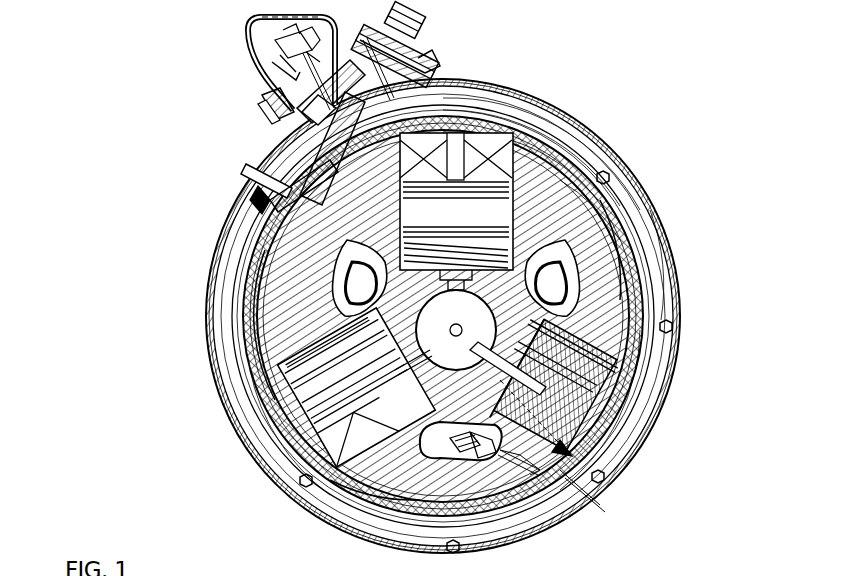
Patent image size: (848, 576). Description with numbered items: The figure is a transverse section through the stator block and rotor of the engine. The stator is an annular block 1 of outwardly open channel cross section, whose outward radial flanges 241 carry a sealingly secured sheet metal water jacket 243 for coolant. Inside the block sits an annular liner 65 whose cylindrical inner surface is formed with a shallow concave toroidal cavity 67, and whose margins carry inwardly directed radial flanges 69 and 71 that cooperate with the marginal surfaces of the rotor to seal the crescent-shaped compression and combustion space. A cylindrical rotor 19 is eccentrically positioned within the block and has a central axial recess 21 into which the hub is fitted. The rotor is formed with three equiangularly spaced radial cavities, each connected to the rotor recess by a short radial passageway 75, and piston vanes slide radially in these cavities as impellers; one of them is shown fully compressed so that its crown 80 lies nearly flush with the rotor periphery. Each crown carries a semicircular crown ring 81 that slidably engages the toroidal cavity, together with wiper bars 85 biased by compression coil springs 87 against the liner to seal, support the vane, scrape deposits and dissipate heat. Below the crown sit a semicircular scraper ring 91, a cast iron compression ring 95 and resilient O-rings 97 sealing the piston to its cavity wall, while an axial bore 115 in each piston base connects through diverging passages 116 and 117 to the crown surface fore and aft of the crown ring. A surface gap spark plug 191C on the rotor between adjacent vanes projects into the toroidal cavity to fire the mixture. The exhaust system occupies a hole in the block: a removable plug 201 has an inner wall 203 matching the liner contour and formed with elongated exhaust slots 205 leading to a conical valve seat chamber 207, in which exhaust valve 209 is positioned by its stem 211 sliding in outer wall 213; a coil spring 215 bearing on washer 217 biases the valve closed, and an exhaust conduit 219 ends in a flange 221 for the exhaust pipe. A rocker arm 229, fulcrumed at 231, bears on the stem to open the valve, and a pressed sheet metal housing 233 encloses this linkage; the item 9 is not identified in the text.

The annular block 1 is at (665, 258).
The bolt 9 is at (519, 513).
The cylindrical rotor 19 is at (640, 280).
The central axial recess 21 is at (433, 331).
The annular liner 65 is at (678, 358).
The toroidal cavity 67 is at (612, 160).
The radial flange 69 is at (262, 345).
The radial flange 71 is at (644, 527).
The radial passageway 75 is at (588, 142).
The piston crown 80 is at (505, 94).
The crown ring 81 is at (470, 105).
The wiper bar 85 is at (575, 540).
The compression coil spring 87 is at (509, 504).
The semicircular ring 91 is at (340, 200).
The compression ring 95 is at (330, 210).
The O-ring 97 is at (340, 232).
The cylindrical bore 115 is at (655, 396).
The diverging passage 116 is at (672, 330).
The diverging passage 117 is at (612, 478).
The surface gap spark plug 191C is at (284, 330).
The removable plug 201 is at (255, 178).
The inner wall 203 is at (255, 200).
The exhaust slot 205 is at (272, 212).
The conical valve seat chamber 207 is at (268, 110).
The exhaust valve 209 is at (305, 120).
The valve stem 211 is at (300, 112).
The outer wall 213 is at (414, 26).
The coil spring 215 is at (285, 90).
The washer 217 is at (305, 58).
The exhaust conduit 219 is at (420, 58).
The flange 221 is at (438, 48).
The rocker arm 229 is at (622, 523).
The fulcrum 231 is at (278, 50).
The sheet metal housing 233 is at (248, 40).
The outward radial flange 241 is at (565, 118).
The sheet metal water jacket 243 is at (672, 258).